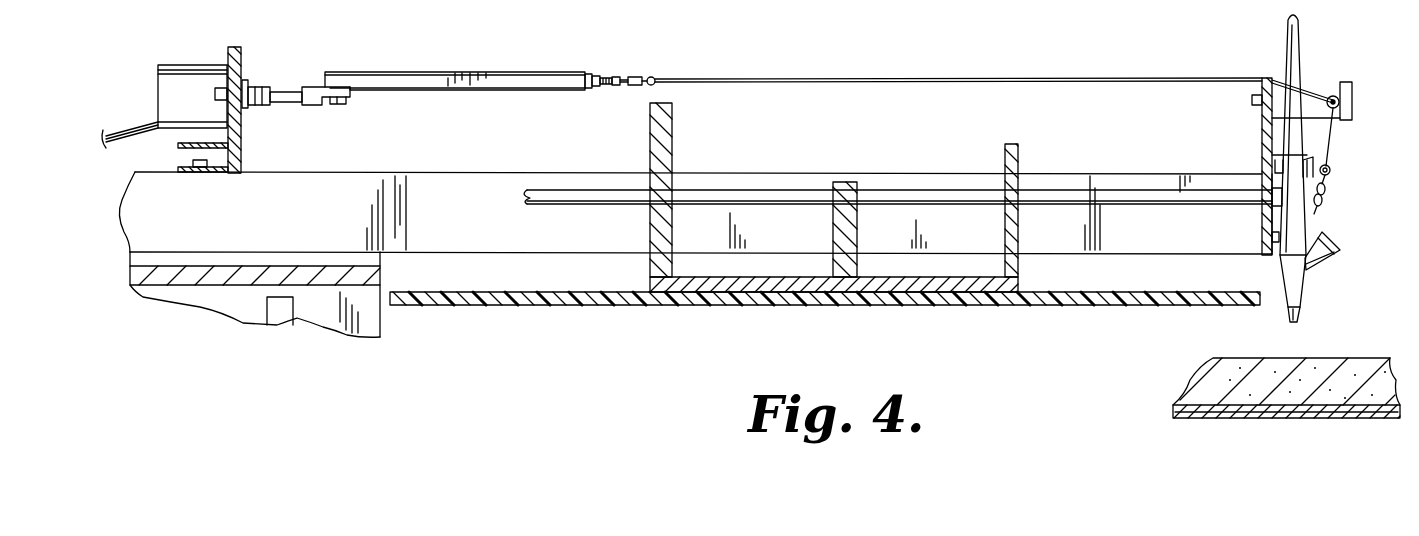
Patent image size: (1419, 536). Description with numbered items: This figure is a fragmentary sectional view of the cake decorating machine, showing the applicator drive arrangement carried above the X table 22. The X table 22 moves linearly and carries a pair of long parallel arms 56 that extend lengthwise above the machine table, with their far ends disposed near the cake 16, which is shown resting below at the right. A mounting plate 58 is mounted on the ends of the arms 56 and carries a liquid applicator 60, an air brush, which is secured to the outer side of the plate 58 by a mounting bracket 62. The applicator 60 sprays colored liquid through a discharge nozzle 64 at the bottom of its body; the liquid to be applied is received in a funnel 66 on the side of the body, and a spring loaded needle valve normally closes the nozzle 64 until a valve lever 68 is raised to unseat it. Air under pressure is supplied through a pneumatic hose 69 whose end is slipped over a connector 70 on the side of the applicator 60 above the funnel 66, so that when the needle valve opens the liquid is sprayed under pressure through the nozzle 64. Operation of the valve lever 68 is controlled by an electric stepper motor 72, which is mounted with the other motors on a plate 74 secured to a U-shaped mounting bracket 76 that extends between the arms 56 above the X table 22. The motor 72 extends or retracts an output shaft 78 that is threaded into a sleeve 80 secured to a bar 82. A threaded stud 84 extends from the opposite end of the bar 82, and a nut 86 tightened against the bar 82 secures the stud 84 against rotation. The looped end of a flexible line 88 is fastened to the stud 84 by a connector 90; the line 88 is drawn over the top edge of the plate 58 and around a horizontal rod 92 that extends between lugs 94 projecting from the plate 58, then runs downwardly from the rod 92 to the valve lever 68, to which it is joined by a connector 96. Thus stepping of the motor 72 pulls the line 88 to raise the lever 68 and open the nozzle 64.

The cake 16 is at (1243, 365).
The X table 22 is at (272, 276).
The parallel arms 56 is at (472, 190).
The mounting plate 58 is at (1262, 128).
The liquid applicator 60 is at (1292, 228).
The mounting bracket 62 is at (1310, 160).
The discharge nozzle 64 is at (1298, 314).
The funnel 66 is at (1334, 255).
The valve lever 68 is at (1323, 204).
The pneumatic hose 69 is at (1062, 195).
The connector 70 is at (1272, 206).
The electric stepper motor 72 is at (180, 70).
The plate 74 is at (233, 53).
The U-shaped mounting bracket 76 is at (217, 170).
The output shaft 78 is at (282, 92).
The sleeve 80 is at (312, 102).
The bar 82 is at (425, 72).
The threaded stud 84 is at (613, 77).
The nut 86 is at (593, 76).
The flexible line 88 is at (882, 78).
The connector 90 is at (651, 76).
The horizontal rod 92 is at (1340, 95).
The lug 94 is at (1330, 88).
The connector 96 is at (1331, 173).